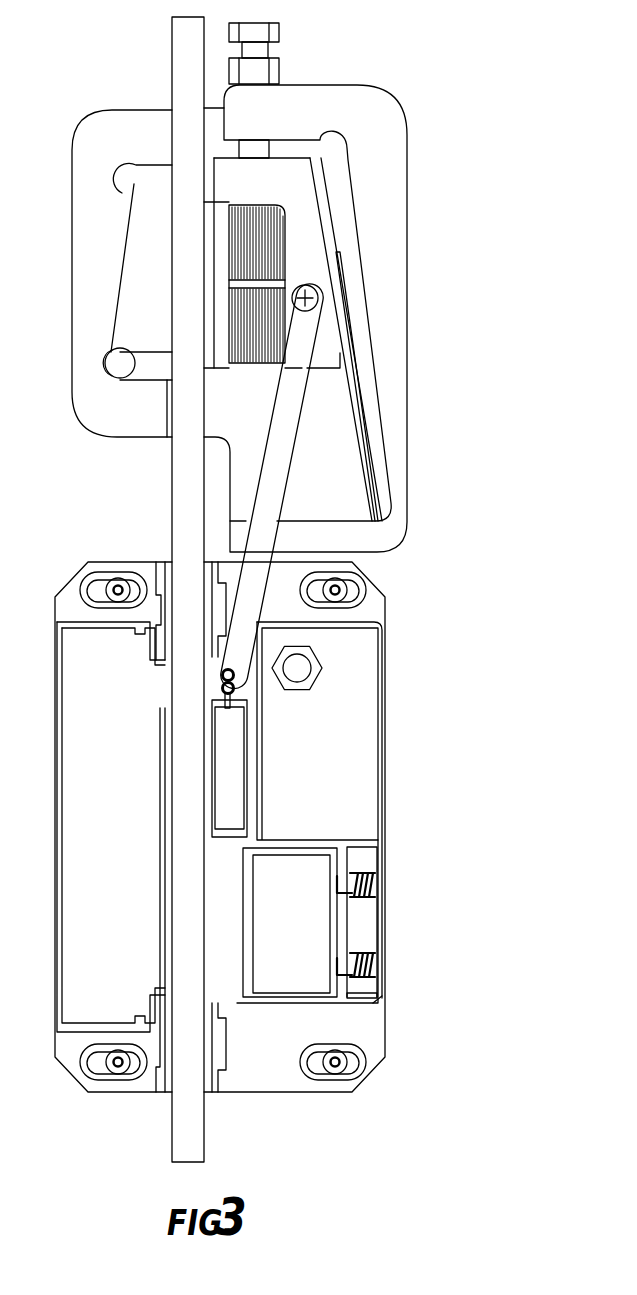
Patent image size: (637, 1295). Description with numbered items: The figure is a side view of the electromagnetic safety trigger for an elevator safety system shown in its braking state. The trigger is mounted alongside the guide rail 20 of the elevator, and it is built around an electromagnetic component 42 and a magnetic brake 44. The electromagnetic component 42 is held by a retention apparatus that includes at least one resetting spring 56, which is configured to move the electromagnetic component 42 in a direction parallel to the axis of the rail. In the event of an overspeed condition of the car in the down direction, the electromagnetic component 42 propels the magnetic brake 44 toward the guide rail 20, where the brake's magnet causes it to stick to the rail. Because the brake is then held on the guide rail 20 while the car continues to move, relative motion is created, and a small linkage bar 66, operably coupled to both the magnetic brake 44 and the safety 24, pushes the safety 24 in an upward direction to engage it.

The guide rail 20 is at (186, 54).
The safety 24 is at (297, 200).
The linkage bar 66 is at (267, 502).
The magnetic brake 44 is at (225, 768).
The electromagnetic component 42 is at (305, 929).
The resetting spring 56 is at (360, 873).